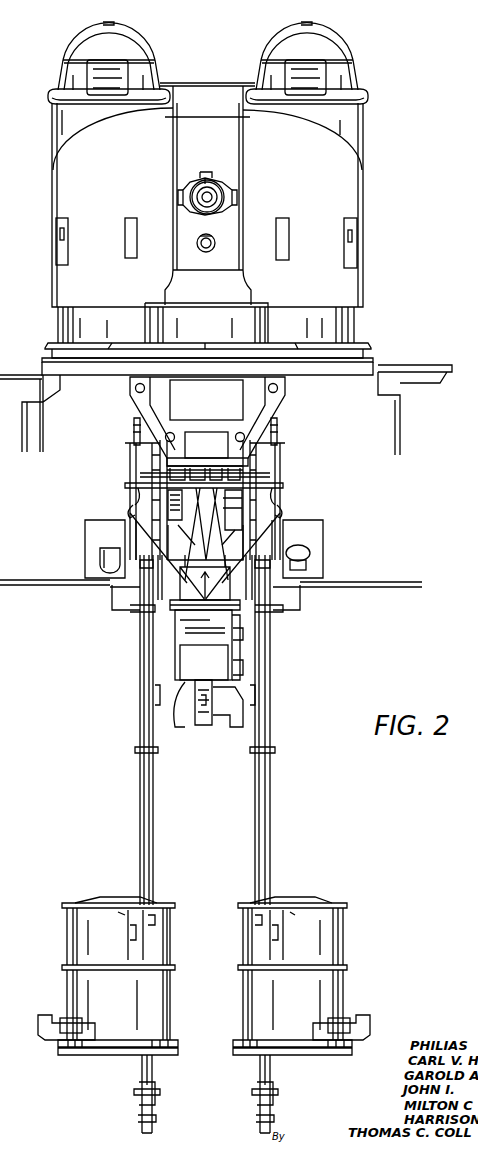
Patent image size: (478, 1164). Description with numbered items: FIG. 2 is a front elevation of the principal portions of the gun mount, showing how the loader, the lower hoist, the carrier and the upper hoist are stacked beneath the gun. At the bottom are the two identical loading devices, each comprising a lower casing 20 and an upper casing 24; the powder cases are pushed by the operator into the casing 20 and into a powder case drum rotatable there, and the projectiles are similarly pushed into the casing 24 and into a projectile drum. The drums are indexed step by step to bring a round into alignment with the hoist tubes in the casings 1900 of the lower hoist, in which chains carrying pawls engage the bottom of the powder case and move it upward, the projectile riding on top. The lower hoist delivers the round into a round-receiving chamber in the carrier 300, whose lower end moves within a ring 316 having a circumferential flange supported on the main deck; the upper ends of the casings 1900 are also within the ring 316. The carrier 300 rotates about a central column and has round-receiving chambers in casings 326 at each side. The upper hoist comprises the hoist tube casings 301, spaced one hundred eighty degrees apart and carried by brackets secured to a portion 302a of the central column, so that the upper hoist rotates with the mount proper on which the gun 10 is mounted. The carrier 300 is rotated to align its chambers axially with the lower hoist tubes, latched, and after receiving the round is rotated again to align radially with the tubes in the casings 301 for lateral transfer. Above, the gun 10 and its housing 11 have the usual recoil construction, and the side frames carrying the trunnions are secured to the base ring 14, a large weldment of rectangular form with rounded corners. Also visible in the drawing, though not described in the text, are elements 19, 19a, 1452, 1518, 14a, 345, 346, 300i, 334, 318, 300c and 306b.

The housing 19 is at (332, 146).
The dome cap 19a is at (88, 44).
The housing 11 is at (193, 183).
The knob mounting 1452 is at (230, 164).
The gun 10 is at (212, 208).
The indicator 1518 is at (205, 253).
The base ring 14 is at (338, 331).
The mounting bracket 14a is at (274, 399).
The portion of the central column 302a is at (215, 468).
The pin 345 is at (134, 424).
The cross bar 346 is at (284, 447).
The casings 326 is at (130, 470).
The hoist tube casings 301 is at (150, 478).
The carrier 300 is at (300, 490).
The rod end 300i is at (280, 492).
The link 334 is at (142, 500).
The ring 316 is at (112, 597).
The right support bracket 318 is at (360, 590).
The coupling 300c is at (235, 592).
The casings 1900 is at (140, 645).
The central unit 306b is at (200, 720).
The upper casing 24 is at (85, 928).
The lower casing 20 is at (82, 983).